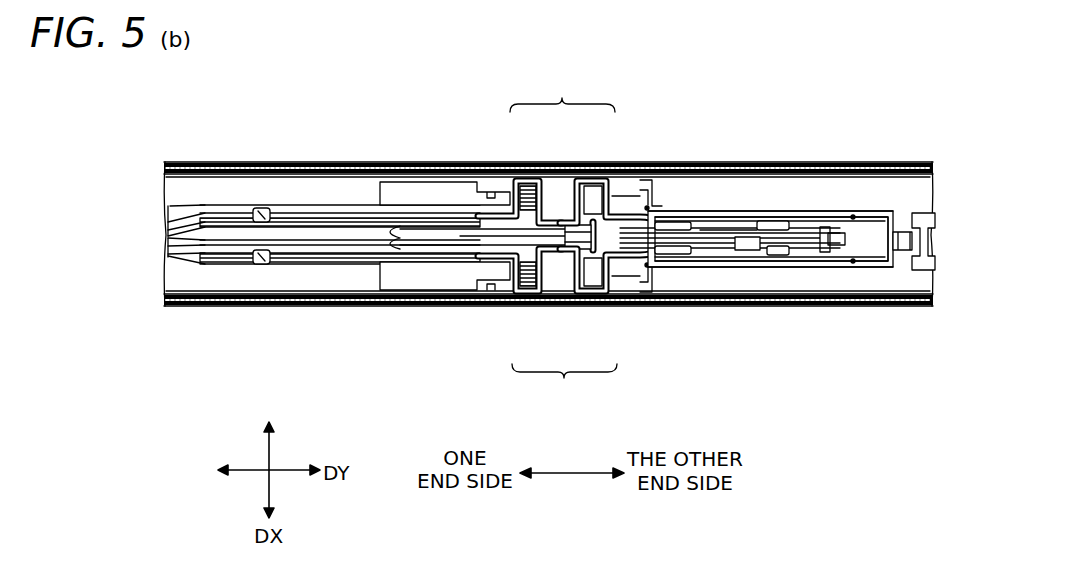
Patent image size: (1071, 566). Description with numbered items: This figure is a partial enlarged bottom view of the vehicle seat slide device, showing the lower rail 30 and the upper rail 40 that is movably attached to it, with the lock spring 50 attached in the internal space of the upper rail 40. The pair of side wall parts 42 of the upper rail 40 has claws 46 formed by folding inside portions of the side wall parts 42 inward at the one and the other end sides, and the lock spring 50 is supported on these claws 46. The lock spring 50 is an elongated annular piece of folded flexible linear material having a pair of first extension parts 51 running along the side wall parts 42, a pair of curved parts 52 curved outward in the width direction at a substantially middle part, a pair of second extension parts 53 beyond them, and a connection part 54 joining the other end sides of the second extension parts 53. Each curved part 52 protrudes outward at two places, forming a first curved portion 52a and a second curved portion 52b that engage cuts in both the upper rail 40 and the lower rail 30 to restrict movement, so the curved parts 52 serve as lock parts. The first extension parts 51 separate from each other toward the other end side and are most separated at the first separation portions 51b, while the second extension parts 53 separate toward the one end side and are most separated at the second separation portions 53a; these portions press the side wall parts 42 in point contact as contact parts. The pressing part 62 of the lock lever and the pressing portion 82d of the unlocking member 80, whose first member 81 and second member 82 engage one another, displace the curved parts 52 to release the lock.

The lower rail 30 is at (188, 307).
The upper rail 40 is at (205, 172).
The side wall parts 42 is at (853, 215).
The claws 46 is at (262, 208).
The lock spring 50 is at (388, 266).
The first extension parts 51 is at (340, 205).
The first separation portions 51b is at (453, 207).
The curved parts 52 is at (563, 239).
The first curved portion 52a is at (526, 177).
The second curved portion 52b is at (586, 177).
The second extension parts 53 is at (787, 210).
The second separation portions 53a is at (647, 207).
The connection part 54 is at (893, 240).
The pressing part 62 is at (552, 268).
The unlocking member 80 is at (732, 239).
The first member 81 is at (708, 227).
The second member 82 is at (708, 250).
The pressing portion 82d is at (614, 177).